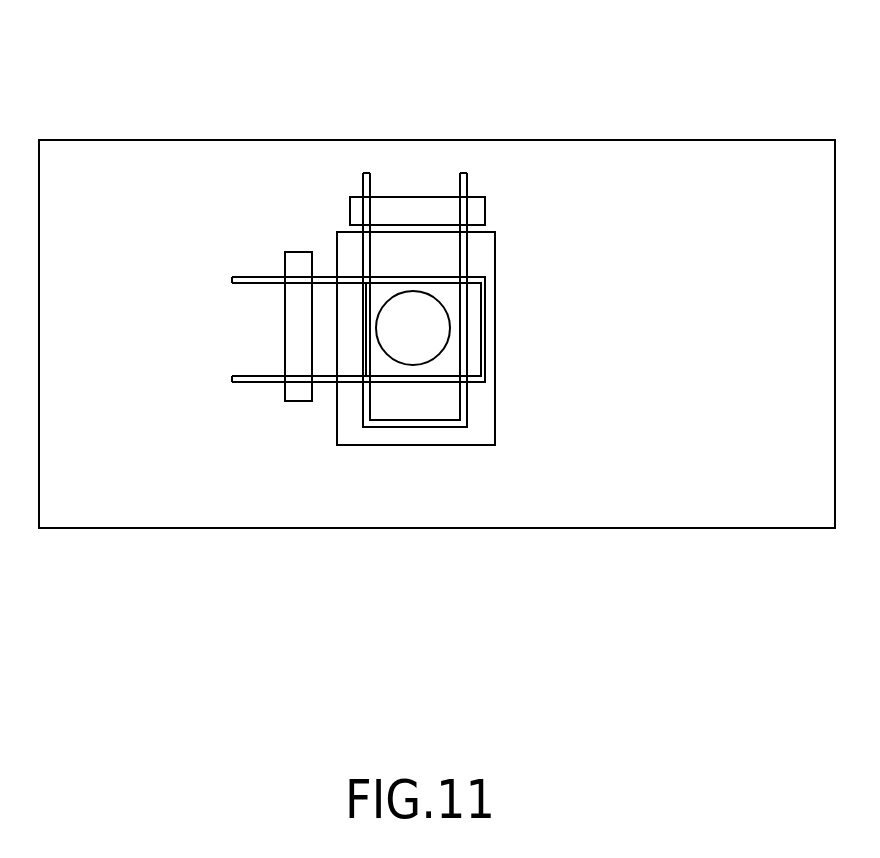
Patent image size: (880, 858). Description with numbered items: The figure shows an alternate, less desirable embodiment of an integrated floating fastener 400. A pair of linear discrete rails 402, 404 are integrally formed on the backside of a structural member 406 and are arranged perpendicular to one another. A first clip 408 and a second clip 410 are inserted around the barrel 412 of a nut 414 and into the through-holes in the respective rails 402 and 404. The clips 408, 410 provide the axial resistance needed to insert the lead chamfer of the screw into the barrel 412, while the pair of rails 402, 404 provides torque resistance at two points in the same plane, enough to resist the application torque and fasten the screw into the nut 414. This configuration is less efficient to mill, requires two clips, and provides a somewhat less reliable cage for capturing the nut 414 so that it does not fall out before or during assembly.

The integrated floating fastener 400 is at (178, 165).
The linear discrete rail 402 is at (297, 395).
The linear discrete rail 404 is at (467, 228).
The structural member 406 is at (721, 504).
The first clip 408 is at (463, 343).
The second clip 410 is at (413, 428).
The barrel 412 is at (432, 343).
The nut 414 is at (378, 290).